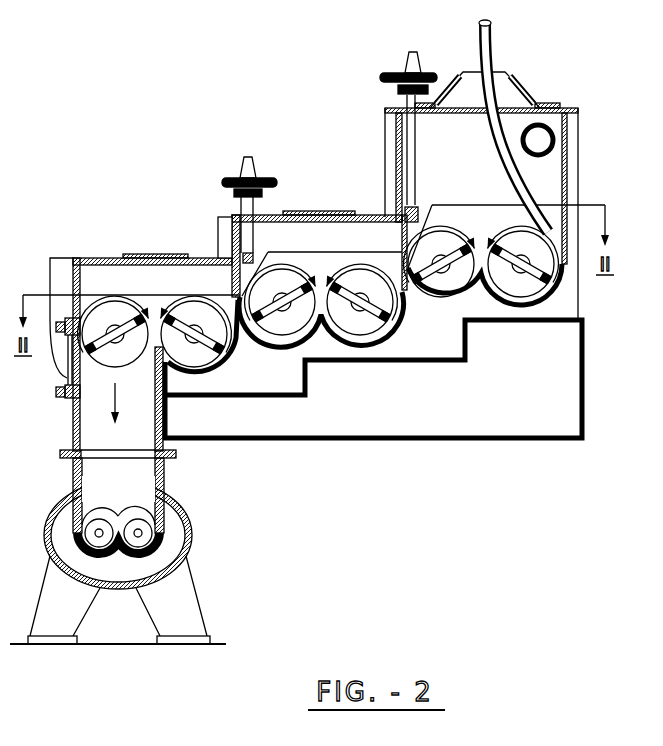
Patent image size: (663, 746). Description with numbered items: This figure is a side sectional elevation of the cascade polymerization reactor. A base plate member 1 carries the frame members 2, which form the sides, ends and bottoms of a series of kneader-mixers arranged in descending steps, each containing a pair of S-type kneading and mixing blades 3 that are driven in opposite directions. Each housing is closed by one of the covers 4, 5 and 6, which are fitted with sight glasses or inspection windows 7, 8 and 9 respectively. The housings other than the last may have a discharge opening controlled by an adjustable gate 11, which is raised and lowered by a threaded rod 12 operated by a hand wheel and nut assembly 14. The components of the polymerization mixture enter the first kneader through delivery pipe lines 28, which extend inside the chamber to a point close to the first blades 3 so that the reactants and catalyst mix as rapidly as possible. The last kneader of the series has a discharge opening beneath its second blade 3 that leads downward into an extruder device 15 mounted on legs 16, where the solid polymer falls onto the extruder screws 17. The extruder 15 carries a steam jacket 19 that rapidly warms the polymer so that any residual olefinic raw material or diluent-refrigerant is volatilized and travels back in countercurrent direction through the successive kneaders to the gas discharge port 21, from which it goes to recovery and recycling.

The base plate member 1 is at (404, 442).
The frame members 2 is at (568, 157).
The kneading and mixing blades 3 is at (176, 314).
The cover 4 is at (565, 110).
The cover 5 is at (358, 214).
The cover 6 is at (221, 257).
The sight glass 7 is at (441, 88).
The sight glass 8 is at (303, 211).
The sight glass 9 is at (166, 254).
The adjustable gate 11 is at (238, 284).
The threaded rod 12 is at (253, 240).
The hand wheel and nut assembly 14 is at (271, 178).
The extruder device 15 is at (188, 514).
The legs 16 is at (146, 607).
The extruder screws 17 is at (138, 518).
The steam jacket 19 is at (181, 546).
The gas discharge port 21 is at (556, 131).
The delivery pipe lines 28 is at (491, 32).